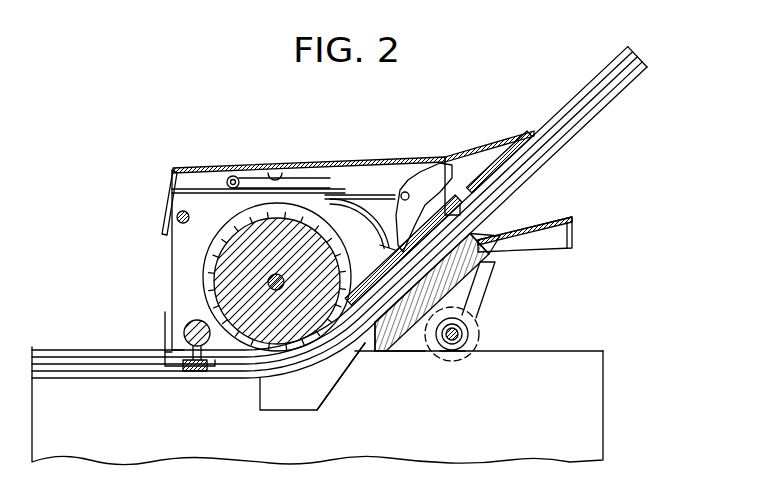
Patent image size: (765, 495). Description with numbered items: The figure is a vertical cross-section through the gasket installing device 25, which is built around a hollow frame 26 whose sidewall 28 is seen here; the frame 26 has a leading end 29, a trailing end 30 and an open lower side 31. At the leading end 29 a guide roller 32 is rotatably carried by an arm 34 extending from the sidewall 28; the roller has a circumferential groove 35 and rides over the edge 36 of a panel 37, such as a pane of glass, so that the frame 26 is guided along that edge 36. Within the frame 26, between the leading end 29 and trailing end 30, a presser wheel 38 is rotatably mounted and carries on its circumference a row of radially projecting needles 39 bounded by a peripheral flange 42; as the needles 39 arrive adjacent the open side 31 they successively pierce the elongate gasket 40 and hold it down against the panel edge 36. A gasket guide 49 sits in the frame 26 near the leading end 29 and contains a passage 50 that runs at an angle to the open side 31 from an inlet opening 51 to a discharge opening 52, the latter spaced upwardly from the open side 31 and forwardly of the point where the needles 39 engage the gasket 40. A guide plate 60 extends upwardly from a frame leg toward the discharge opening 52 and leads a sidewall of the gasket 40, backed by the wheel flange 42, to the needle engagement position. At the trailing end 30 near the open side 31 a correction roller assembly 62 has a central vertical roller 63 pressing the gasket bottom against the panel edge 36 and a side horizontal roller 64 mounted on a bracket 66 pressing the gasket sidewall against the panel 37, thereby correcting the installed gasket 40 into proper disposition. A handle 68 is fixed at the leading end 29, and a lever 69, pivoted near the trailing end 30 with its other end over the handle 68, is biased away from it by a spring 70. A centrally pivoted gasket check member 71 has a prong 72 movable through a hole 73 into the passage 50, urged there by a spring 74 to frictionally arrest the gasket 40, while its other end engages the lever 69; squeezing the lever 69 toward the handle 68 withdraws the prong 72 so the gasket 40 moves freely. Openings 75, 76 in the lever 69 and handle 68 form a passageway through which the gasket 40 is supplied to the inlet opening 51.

The gasket installing device 25 is at (168, 168).
The hollow frame 26 is at (159, 236).
The sidewall 28 is at (213, 210).
The leading end 29 is at (490, 250).
The trailing end 30 is at (172, 262).
The open lower side 31 is at (223, 345).
The guide roller 32 is at (480, 335).
The arm 34 is at (467, 317).
The circumferential groove 35 is at (467, 352).
The edge of panel 36 is at (567, 352).
The panel 37 is at (587, 417).
The presser wheel 38 is at (300, 330).
The needles 39 is at (210, 295).
The gasket 40 is at (605, 80).
The flange 42 is at (288, 210).
The gasket guide 49 is at (427, 360).
The passage 50 is at (387, 348).
The inlet opening 51 is at (497, 253).
The discharge opening 52 is at (358, 343).
The guide plate 60 is at (312, 410).
The correction roller assembly 62 is at (167, 370).
The central vertical roller 63 is at (185, 328).
The side horizontal roller 64 is at (200, 373).
The bracket 66 is at (163, 350).
The handle 68 is at (575, 228).
The lever 69 is at (368, 165).
The spring 70 is at (262, 176).
The gasket check member 71 is at (420, 173).
The prong 72 is at (400, 265).
The hole 73 is at (458, 188).
The spring 74 is at (373, 203).
The opening 75 is at (494, 150).
The opening 76 is at (515, 224).